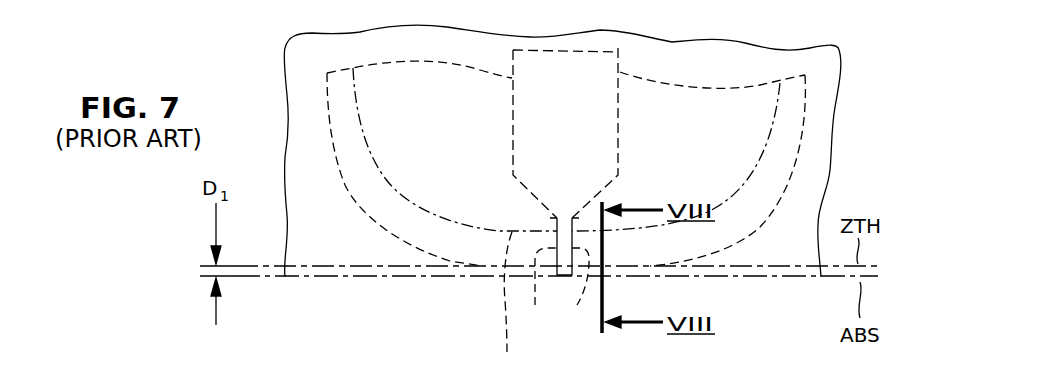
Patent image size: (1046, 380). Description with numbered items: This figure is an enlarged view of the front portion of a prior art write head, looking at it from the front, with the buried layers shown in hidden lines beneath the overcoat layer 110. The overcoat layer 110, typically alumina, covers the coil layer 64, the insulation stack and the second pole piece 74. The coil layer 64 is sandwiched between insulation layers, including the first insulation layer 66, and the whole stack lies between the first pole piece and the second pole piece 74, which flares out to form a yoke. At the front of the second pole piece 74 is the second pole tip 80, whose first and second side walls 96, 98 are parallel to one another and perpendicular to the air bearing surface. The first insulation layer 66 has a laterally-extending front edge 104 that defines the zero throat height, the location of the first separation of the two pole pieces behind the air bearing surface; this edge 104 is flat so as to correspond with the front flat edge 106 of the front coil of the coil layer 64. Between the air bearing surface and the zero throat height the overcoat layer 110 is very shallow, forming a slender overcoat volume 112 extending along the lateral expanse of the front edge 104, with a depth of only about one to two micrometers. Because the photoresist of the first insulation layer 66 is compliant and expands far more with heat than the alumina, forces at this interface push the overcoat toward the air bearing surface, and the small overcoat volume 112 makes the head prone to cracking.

The overcoat layer 110 is at (298, 52).
The first insulation layer 66 is at (330, 98).
The coil layer 64 is at (365, 214).
The second pole piece layer 74 is at (580, 157).
The second pole tip 80 is at (562, 276).
The first side wall 96 is at (537, 290).
The second side wall 98 is at (576, 290).
The front flat edge 106 is at (506, 306).
The front edge 104 is at (473, 279).
The slender overcoat volume 112 is at (377, 279).